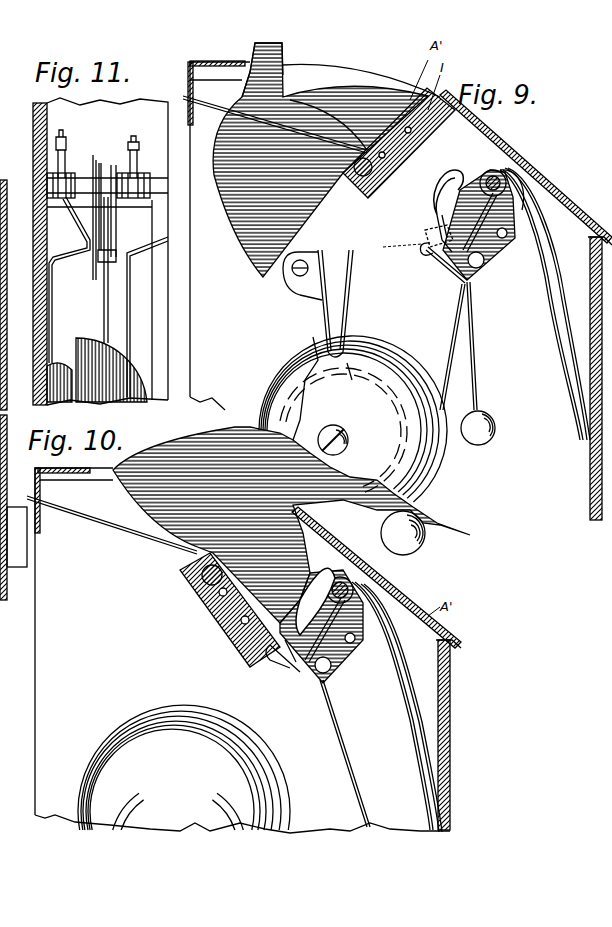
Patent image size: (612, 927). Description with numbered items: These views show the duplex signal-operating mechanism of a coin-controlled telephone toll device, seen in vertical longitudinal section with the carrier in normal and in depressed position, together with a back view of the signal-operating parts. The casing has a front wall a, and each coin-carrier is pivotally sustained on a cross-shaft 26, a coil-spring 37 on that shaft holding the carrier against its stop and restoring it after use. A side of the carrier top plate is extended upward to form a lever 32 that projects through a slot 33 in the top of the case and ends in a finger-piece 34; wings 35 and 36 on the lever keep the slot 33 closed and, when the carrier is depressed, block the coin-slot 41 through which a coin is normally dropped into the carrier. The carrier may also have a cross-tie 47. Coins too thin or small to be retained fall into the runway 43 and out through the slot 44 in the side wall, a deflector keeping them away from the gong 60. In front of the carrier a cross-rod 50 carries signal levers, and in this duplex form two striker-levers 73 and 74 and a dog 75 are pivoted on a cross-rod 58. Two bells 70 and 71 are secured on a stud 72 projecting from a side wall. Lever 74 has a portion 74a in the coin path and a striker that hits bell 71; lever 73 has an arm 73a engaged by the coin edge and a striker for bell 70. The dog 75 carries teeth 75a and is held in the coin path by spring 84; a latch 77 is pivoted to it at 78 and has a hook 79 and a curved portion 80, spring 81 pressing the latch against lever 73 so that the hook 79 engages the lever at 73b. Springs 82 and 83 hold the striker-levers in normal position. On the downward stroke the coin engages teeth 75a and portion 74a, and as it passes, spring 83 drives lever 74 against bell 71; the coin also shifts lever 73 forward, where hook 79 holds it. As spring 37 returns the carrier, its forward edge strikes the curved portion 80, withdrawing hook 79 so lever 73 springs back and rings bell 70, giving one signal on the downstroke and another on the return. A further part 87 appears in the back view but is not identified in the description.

In FIG. 9, the cross-shaft 26 is at (357, 182).
In FIG. 10, the cross-shaft 26 is at (202, 582).
In FIG. 9, the lever 32 is at (284, 52).
In FIG. 10, the lever 32 is at (367, 504).
In FIG. 9, the slot 33 is at (392, 78).
In FIG. 10, the finger-piece 34 is at (425, 541).
In FIG. 9, the wing 35 is at (395, 85).
In FIG. 10, the wing 35 is at (238, 610).
In FIG. 9, the wing 36 is at (320, 160).
In FIG. 10, the wing 36 is at (150, 483).
In FIG. 9, the coil-spring 37 is at (215, 108).
In FIG. 10, the coil-spring 37 is at (118, 525).
In FIG. 9, the coin-slot 41 is at (458, 108).
In FIG. 10, the coin-slot 41 is at (308, 522).
In FIG. 9, the runway 43 is at (320, 317).
In FIG. 10, the slot 44 is at (7, 478).
In FIG. 10, the cross-tie 47 is at (238, 622).
In FIG. 10, the cross-rod 50 is at (355, 588).
In FIG. 11, the cross-rod 58 is at (163, 196).
In FIG. 9, the cross-rod 58 is at (505, 180).
In FIG. 10, the gong 60 is at (8, 582).
In FIG. 11, the bell 70 is at (111, 370).
In FIG. 11, the bell 71 is at (59, 382).
In FIG. 9, the bell 71 is at (284, 398).
In FIG. 9, the stud 72 is at (342, 430).
In FIG. 10, the stud 72 is at (200, 778).
In FIG. 11, the striker-lever 73 is at (158, 158).
In FIG. 9, the striker-lever 73 is at (479, 357).
In FIG. 10, the striker-lever 73 is at (342, 768).
In FIG. 9, the arm 73a is at (445, 272).
In FIG. 10, the arm 73a is at (300, 672).
In FIG. 11, the hook-engaging portion 73b is at (112, 264).
In FIG. 9, the hook-engaging portion 73b is at (423, 256).
In FIG. 10, the hook-engaging portion 73b is at (312, 684).
In FIG. 11, the striker-lever 74 is at (62, 135).
In FIG. 9, the striker-lever 74 is at (456, 377).
In FIG. 11, the projecting portion 74a is at (84, 236).
In FIG. 9, the projecting portion 74a is at (478, 282).
In FIG. 11, the dog 75 is at (93, 155).
In FIG. 9, the dog 75 is at (513, 207).
In FIG. 11, the teeth 75a is at (97, 213).
In FIG. 9, the teeth 75a is at (423, 235).
In FIG. 11, the latch 77 is at (117, 232).
In FIG. 9, the latch 77 is at (438, 208).
In FIG. 10, the latch 77 is at (276, 654).
In FIG. 9, the pivot 78 is at (487, 266).
In FIG. 10, the pivot 78 is at (327, 676).
In FIG. 9, the hook 79 is at (458, 288).
In FIG. 10, the hook 79 is at (338, 662).
In FIG. 11, the curved portion 80 is at (135, 150).
In FIG. 9, the curved portion 80 is at (438, 187).
In FIG. 10, the curved portion 80 is at (310, 590).
In FIG. 9, the spring 81 is at (507, 248).
In FIG. 10, the spring 81 is at (351, 645).
In FIG. 11, the spring 82 is at (145, 174).
In FIG. 9, the spring 82 is at (552, 216).
In FIG. 10, the spring 82 is at (394, 646).
In FIG. 11, the spring 83 is at (57, 171).
In FIG. 9, the spring 83 is at (560, 278).
In FIG. 10, the spring 83 is at (400, 674).
In FIG. 11, the spring 84 is at (104, 185).
In FIG. 9, the spring 84 is at (510, 222).
In FIG. 10, the spring 84 is at (367, 617).
In FIG. 11, the collar 87 is at (101, 165).
In FIG. 9, the front wall a is at (589, 466).
In FIG. 10, the front wall a is at (448, 735).